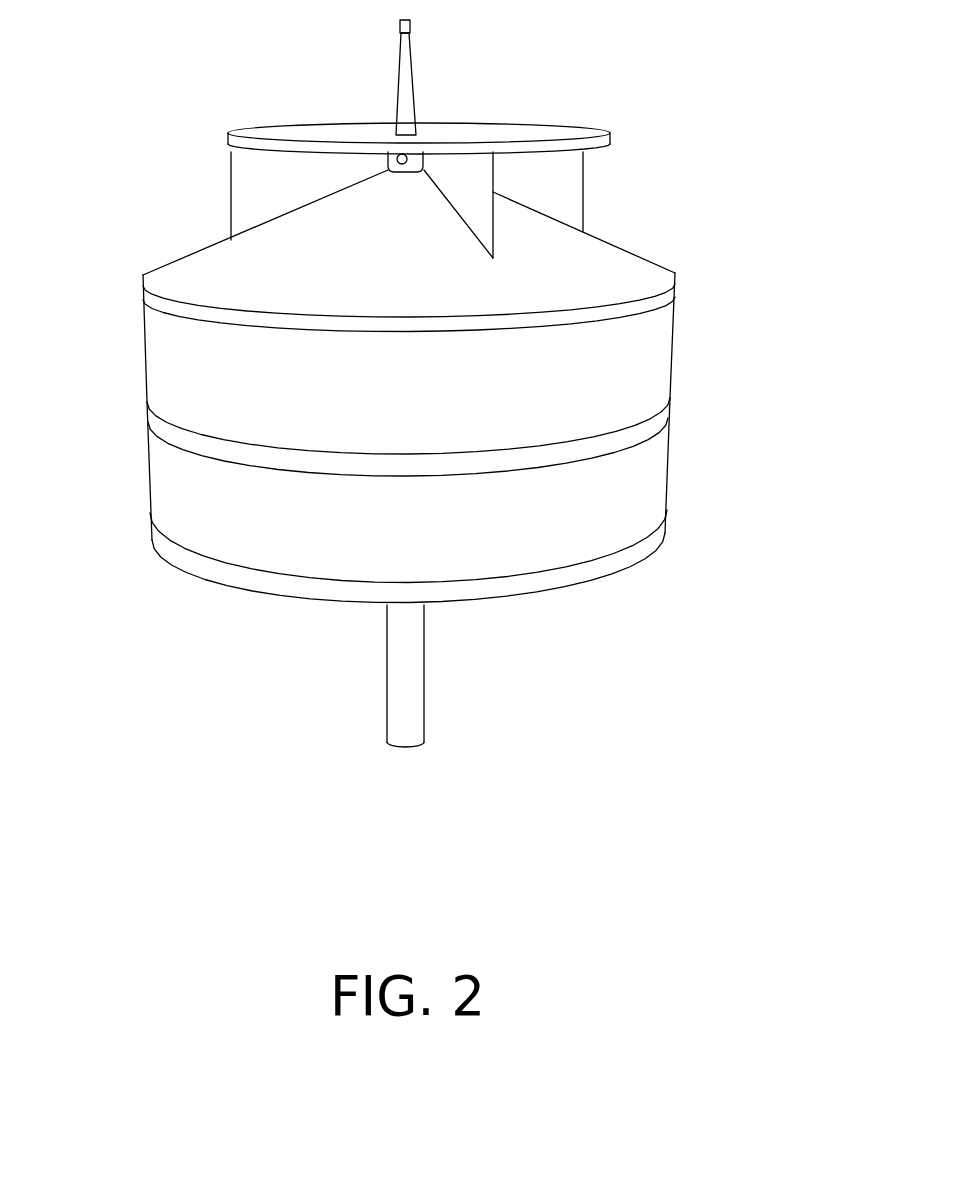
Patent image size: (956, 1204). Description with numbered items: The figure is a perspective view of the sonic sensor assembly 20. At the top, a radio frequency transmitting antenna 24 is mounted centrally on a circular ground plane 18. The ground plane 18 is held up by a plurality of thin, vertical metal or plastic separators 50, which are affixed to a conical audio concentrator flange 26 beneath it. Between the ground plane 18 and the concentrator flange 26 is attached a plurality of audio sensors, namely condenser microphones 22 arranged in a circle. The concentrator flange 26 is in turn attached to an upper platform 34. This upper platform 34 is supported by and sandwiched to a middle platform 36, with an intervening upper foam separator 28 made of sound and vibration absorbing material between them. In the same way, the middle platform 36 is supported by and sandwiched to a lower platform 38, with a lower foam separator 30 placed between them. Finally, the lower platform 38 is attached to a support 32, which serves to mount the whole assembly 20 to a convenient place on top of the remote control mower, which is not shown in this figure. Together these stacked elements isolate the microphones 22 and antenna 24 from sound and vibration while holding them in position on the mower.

The ground plane 18 is at (531, 127).
The sonic sensor assembly 20 is at (734, 757).
The condenser microphones 22 is at (394, 172).
The radio frequency transmitting antenna 24 is at (413, 90).
The conical audio concentrator flange 26 is at (640, 255).
The upper foam separator 28 is at (675, 325).
The lower foam separator 30 is at (668, 470).
The support 32 is at (387, 654).
The upper platform 34 is at (143, 287).
The middle platform 36 is at (146, 405).
The lower platform 38 is at (150, 530).
The separators 50 is at (231, 172).